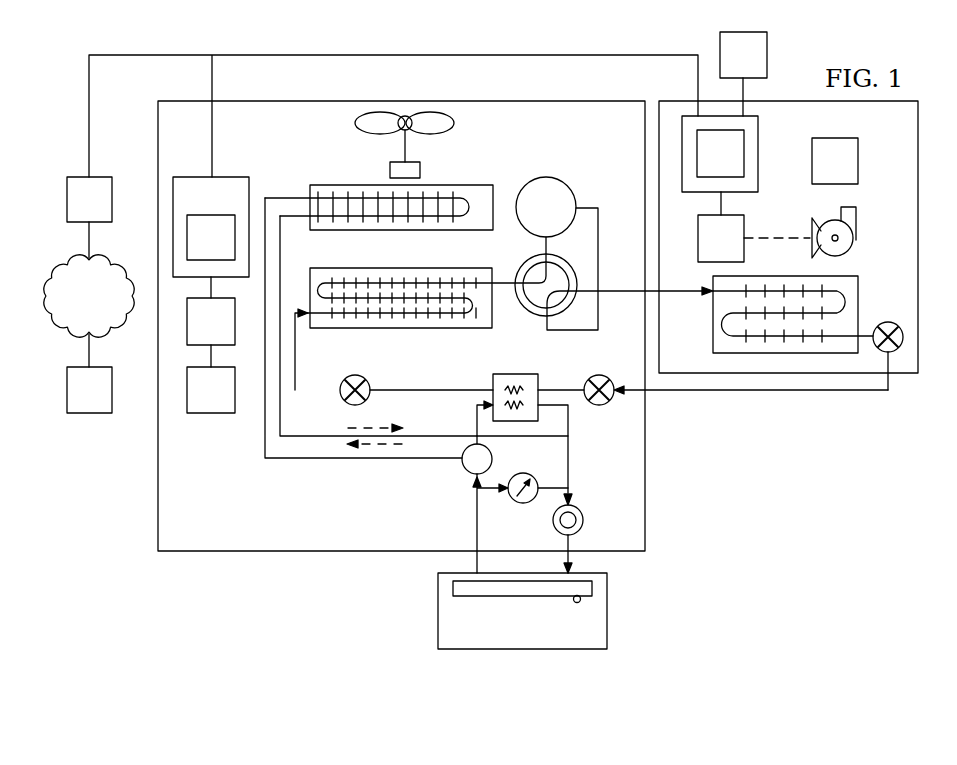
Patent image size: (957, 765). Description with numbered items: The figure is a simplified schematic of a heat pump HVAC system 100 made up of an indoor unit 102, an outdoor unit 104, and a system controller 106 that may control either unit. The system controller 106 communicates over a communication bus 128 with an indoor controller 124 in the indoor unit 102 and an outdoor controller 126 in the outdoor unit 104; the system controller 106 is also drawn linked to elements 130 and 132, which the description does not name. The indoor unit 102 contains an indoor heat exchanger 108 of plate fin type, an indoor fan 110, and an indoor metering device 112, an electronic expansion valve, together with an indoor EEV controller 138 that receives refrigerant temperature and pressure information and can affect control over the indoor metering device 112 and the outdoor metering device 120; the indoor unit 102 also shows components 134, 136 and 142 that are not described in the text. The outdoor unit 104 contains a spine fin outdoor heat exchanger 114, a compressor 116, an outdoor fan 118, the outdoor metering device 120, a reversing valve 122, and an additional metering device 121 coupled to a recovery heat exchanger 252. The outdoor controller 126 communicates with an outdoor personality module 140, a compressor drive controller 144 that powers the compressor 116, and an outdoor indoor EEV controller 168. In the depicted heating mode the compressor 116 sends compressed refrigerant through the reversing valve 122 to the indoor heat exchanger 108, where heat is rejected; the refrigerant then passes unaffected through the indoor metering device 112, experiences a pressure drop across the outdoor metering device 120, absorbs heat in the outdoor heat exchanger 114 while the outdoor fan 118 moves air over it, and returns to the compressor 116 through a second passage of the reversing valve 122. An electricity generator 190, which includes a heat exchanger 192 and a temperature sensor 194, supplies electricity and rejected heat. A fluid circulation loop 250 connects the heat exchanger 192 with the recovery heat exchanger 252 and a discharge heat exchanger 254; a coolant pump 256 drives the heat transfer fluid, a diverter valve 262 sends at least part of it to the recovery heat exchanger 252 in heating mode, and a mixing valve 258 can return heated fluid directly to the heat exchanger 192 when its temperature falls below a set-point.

The HVAC system 100 is at (762, 484).
The indoor unit 102 is at (824, 130).
The outdoor unit 104 is at (270, 97).
The system controller 106 is at (75, 209).
The indoor heat exchanger 108 is at (712, 316).
The indoor fan 110 is at (857, 233).
The indoor metering device 112 is at (888, 321).
The outdoor heat exchanger 114 is at (404, 330).
The compressor 116 is at (532, 216).
The outdoor fan 118 is at (355, 121).
The outdoor metering device 120 is at (340, 396).
The additional metering device 121 is at (600, 406).
The reversing valve 122 is at (526, 314).
The indoor controller 124 is at (760, 159).
The outdoor controller 126 is at (197, 208).
The communication bus 128 is at (136, 57).
The remote device 130 is at (75, 399).
The network cloud 132 is at (75, 305).
The processor 134 is at (706, 165).
The sensor 136 is at (729, 66).
The indoor EEV controller 138 is at (821, 171).
The outdoor personality module 140 is at (197, 250).
The fan driver 142 is at (707, 248).
The compressor drive controller 144 is at (197, 333).
The outdoor indoor EEV controller 168 is at (197, 403).
The electricity generator 190 is at (607, 606).
The heat exchanger 192 is at (524, 597).
The temperature sensor 194 is at (578, 603).
The fluid circulation loop 250 is at (244, 499).
The recovery heat exchanger 252 is at (492, 381).
The discharge heat exchanger 254 is at (372, 185).
The coolant pump 256 is at (585, 521).
The mixing valve 258 is at (523, 504).
The diverter valve 262 is at (466, 471).